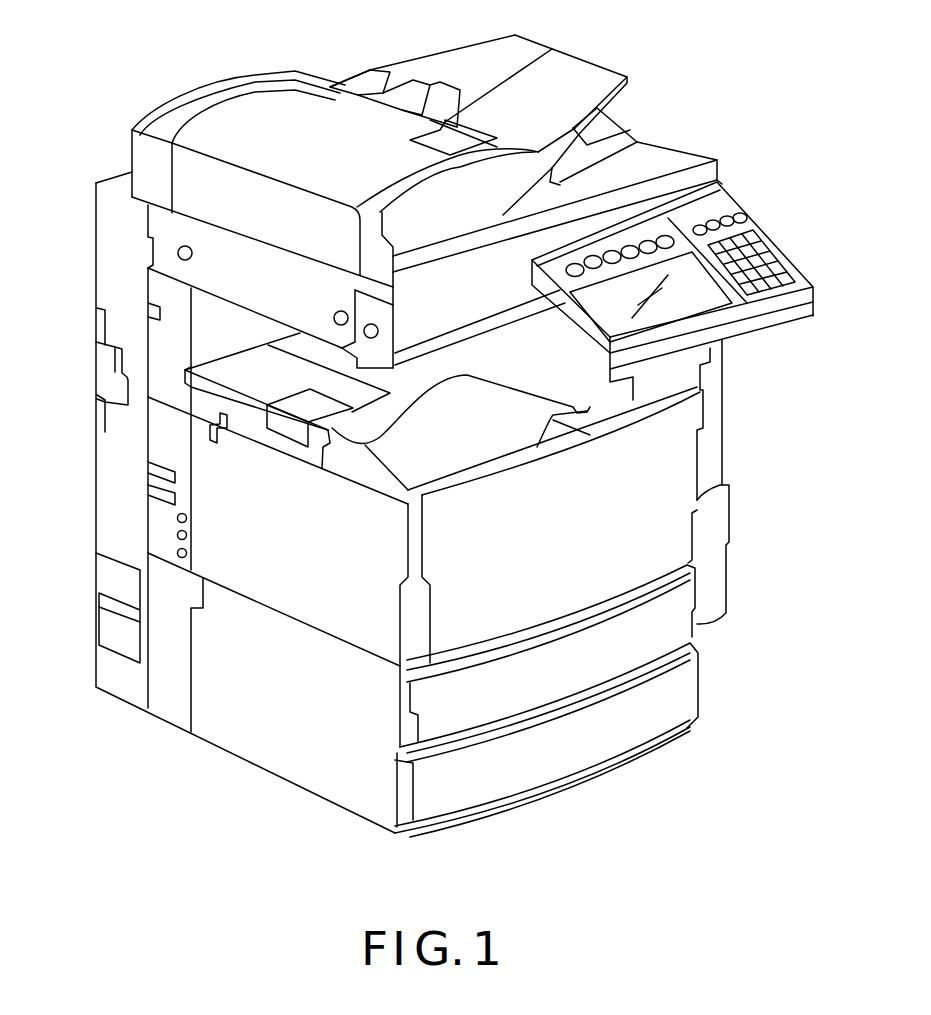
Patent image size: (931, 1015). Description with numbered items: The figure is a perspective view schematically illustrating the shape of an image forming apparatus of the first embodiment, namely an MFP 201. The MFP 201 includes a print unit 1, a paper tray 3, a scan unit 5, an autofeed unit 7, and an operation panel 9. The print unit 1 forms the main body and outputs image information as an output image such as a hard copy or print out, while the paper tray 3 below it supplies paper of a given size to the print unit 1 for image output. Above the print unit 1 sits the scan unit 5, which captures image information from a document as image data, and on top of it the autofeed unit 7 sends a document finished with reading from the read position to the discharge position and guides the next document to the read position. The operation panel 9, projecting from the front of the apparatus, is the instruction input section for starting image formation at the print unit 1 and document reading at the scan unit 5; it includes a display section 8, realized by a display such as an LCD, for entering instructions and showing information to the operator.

The MFP 201 is at (690, 132).
The print unit 1 is at (293, 590).
The paper tray 3 is at (327, 735).
The scan unit 5 is at (180, 267).
The autofeed unit 7 is at (277, 110).
The display section 8 is at (680, 298).
The operation panel 9 is at (813, 312).